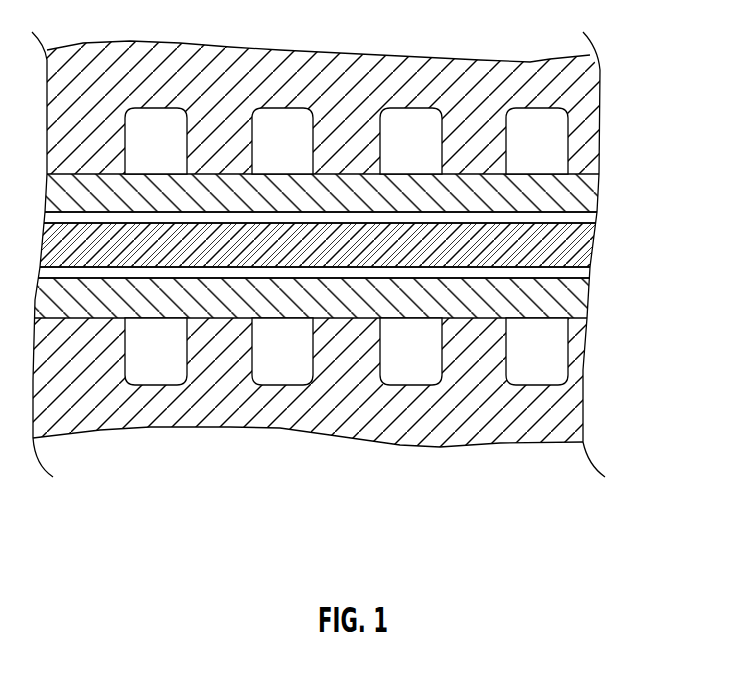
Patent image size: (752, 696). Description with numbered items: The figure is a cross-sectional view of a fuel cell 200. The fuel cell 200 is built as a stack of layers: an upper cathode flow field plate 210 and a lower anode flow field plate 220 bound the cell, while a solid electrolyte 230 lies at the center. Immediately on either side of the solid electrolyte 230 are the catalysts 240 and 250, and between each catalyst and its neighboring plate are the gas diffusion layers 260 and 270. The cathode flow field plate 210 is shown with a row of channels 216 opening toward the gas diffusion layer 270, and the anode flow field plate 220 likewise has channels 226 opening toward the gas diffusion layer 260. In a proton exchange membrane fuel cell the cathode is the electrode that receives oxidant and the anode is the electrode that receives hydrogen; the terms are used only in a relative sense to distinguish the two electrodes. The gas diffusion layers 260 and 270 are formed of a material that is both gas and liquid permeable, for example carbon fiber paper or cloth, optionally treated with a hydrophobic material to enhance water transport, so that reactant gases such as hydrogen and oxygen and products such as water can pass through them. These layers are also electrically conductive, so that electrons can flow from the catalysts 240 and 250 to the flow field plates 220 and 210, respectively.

The fuel cell 200 is at (553, 495).
The cathode flow field plate 210 is at (353, 78).
The channels in first substrate 216 is at (283, 107).
The anode flow field plate 220 is at (373, 387).
The channels in second substrate 226 is at (288, 390).
The solid electrolyte 230 is at (582, 252).
The catalyst 240 is at (578, 272).
The catalyst 250 is at (577, 218).
The gas diffusion layer 260 is at (575, 288).
The gas diffusion layer 270 is at (572, 193).